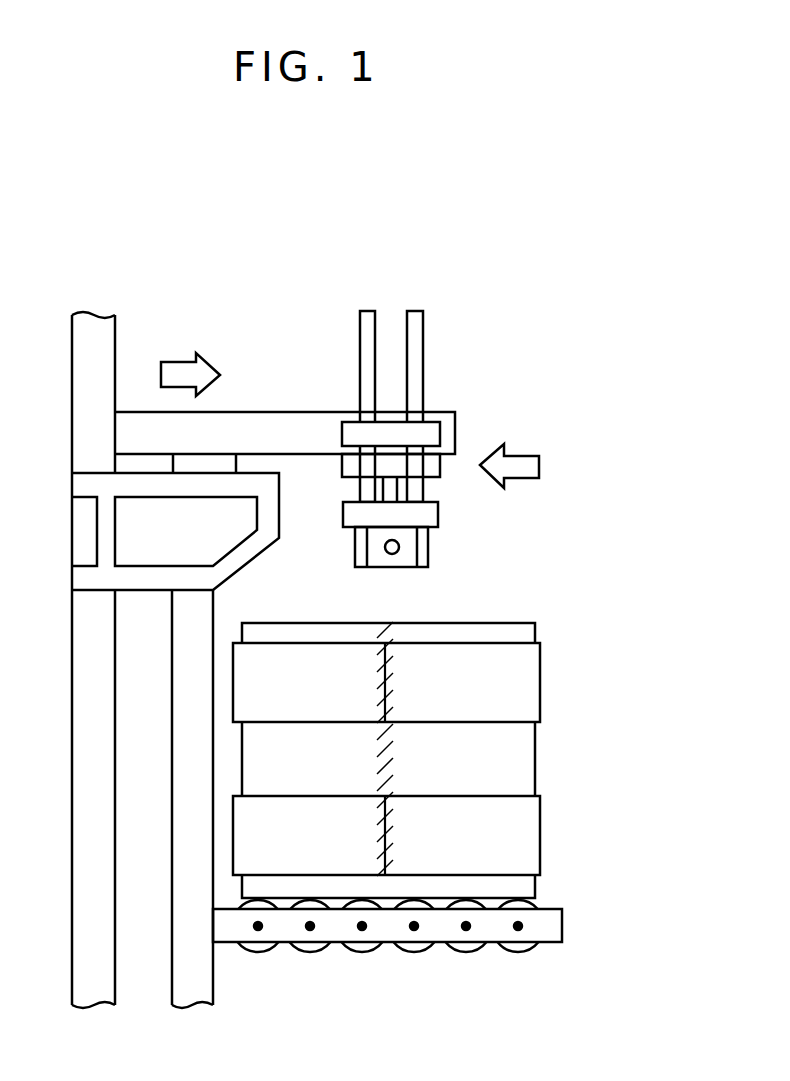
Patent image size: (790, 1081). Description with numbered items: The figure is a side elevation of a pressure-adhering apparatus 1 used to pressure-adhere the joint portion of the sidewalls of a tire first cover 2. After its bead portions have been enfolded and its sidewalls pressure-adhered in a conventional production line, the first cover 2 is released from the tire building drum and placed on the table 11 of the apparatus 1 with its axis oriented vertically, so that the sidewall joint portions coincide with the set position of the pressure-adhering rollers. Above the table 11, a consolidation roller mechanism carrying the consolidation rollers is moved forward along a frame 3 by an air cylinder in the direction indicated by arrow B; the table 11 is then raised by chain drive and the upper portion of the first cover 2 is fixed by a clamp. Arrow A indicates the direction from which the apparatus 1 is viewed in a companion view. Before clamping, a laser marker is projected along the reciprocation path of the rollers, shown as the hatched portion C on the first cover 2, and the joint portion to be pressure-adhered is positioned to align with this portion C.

The pressure-adhering apparatus 1 is at (486, 274).
The first cover 2 is at (562, 692).
The frame 3 is at (447, 422).
The table 11 is at (550, 923).
The hatched portion C is at (398, 692).
The arrow A is at (509, 455).
The arrow B is at (190, 360).